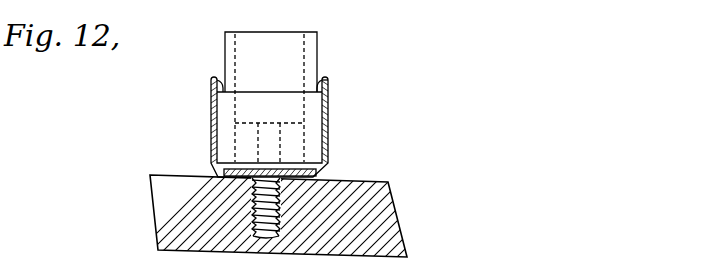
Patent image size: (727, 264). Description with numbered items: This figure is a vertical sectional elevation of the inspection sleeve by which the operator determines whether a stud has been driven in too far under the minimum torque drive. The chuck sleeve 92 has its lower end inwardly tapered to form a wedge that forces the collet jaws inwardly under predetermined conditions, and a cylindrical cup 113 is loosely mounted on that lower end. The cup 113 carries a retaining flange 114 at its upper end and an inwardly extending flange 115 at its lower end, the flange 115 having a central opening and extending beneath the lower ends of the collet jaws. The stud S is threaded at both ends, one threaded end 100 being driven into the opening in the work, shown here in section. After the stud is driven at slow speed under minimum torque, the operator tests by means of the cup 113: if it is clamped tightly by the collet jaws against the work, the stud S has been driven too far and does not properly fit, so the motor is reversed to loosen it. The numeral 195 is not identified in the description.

The sleeve 92 is at (302, 49).
The cup 113 is at (211, 105).
The retaining flange 114 is at (325, 81).
The inwardly extending flange 115 is at (305, 160).
The threaded end 100 is at (253, 202).
The stud S is at (280, 200).
The part of adjacent figure 195 is at (107, 263).